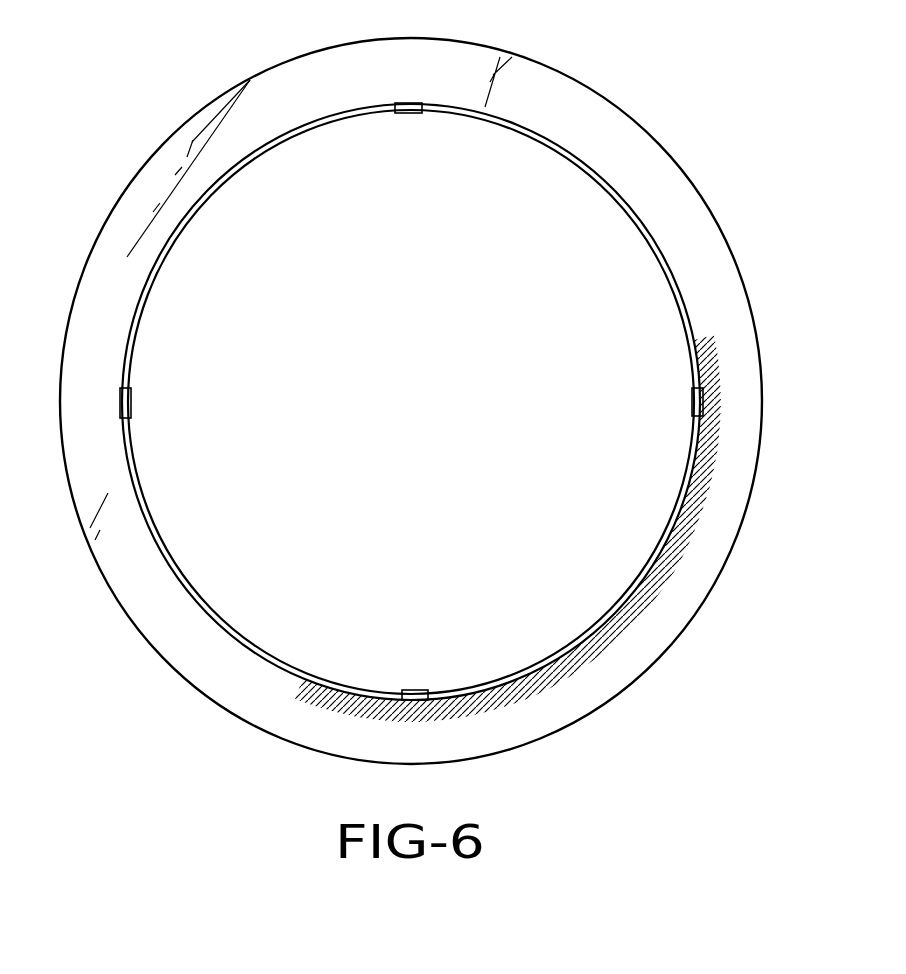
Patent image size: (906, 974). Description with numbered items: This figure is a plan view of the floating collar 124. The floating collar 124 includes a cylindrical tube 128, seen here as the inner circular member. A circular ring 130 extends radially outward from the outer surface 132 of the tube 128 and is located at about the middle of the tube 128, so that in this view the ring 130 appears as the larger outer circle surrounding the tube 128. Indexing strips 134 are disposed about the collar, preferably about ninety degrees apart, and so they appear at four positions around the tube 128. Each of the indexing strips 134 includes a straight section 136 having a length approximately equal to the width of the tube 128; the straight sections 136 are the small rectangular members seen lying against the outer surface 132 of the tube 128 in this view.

The floating collar 124 is at (123, 161).
The cylindrical tube 128 is at (657, 253).
The circular ring 130 is at (705, 240).
The outer surface 132 is at (620, 193).
The indexing strips 134 is at (703, 396).
The straight section 136 is at (692, 398).